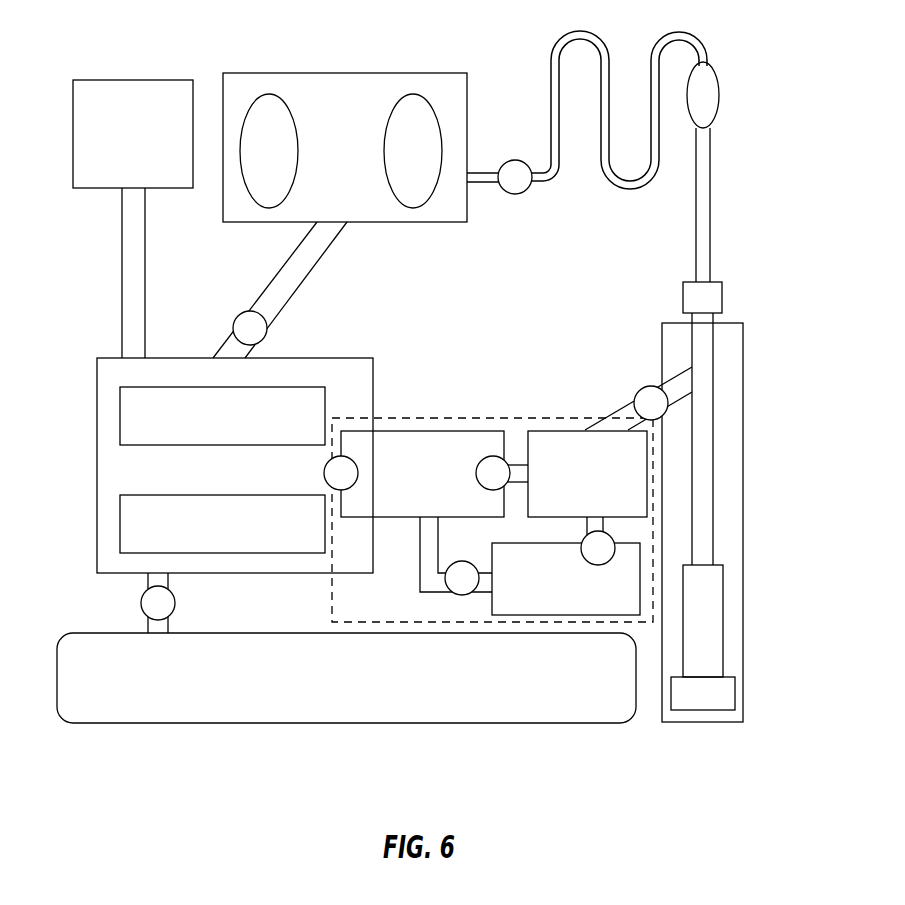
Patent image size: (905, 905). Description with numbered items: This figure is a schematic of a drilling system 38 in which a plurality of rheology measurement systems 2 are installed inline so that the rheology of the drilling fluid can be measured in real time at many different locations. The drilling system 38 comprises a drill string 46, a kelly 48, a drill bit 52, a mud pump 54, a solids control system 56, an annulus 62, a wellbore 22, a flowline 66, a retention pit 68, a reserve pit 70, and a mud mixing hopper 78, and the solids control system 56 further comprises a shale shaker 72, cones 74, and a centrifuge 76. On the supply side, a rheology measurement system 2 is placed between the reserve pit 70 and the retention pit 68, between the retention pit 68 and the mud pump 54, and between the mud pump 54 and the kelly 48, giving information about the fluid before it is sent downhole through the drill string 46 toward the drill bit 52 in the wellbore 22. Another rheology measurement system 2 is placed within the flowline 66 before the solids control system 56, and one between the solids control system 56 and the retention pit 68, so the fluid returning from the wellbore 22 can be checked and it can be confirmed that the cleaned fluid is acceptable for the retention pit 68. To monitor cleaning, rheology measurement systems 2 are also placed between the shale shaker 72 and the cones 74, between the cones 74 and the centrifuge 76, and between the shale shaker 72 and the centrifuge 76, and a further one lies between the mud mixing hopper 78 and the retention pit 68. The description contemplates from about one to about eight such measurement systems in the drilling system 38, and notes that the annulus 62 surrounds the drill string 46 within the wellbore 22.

The rheology measurement system 2 is at (513, 160).
The wellbore 22 is at (705, 462).
The drilling system 38 is at (495, 778).
The drill string 46 is at (705, 378).
The kelly 48 is at (712, 212).
The drill bit 52 is at (720, 695).
The mud pump 54 is at (340, 82).
The solids control system 56 is at (421, 400).
The annulus 62 is at (723, 633).
The flowline 66 is at (623, 408).
The retention pit 68 is at (107, 468).
The reserve pit 70 is at (127, 710).
The shale shaker 72 is at (565, 450).
The cones 74 is at (520, 598).
The centrifuge 76 is at (407, 508).
The mud mixing hopper 78 is at (85, 135).